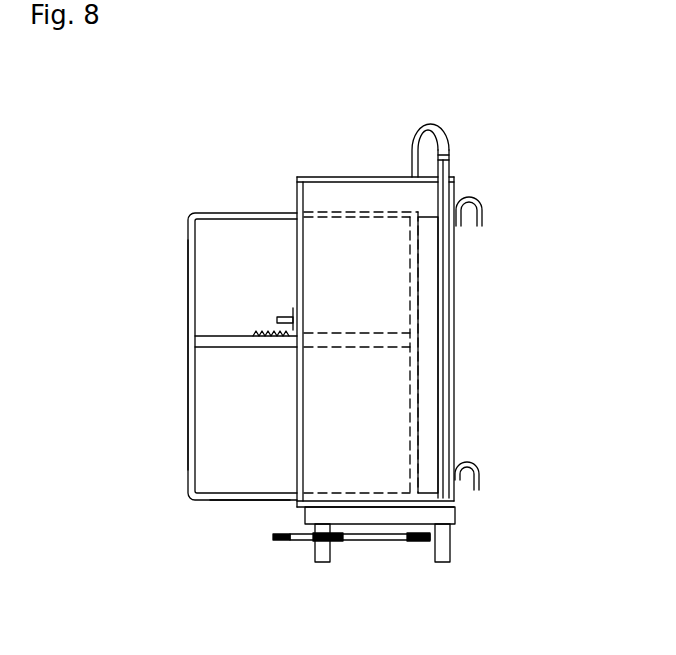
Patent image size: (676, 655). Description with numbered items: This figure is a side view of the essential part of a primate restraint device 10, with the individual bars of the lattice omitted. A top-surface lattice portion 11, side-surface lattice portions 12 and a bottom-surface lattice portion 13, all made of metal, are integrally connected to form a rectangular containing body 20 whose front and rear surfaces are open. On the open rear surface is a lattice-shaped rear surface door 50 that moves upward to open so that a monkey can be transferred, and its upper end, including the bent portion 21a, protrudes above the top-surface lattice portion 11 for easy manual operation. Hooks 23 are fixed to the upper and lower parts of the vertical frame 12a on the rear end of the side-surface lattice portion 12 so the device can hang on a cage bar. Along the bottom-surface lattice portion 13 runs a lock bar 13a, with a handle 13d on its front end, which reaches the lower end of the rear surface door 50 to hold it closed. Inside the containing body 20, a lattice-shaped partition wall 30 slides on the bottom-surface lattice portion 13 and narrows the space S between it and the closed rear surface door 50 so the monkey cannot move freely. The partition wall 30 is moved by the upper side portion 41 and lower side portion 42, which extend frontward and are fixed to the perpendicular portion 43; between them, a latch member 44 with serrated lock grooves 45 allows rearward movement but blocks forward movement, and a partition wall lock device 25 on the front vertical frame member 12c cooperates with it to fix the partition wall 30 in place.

The primate restraint device 10 is at (105, 212).
The containing body 20 is at (304, 153).
The top-surface lattice portion 11 is at (348, 177).
The side-surface lattice portion 12 is at (318, 204).
The vertical frame 12a is at (457, 181).
The vertical frame member 12c is at (305, 416).
The bottom-surface lattice portion 13 is at (364, 507).
The lock bar 13a is at (396, 540).
The handle 13d is at (285, 541).
The pipe bend 21a is at (430, 122).
The hook 23 is at (484, 216).
The partition wall lock device 25 is at (293, 314).
The partition wall 30 is at (410, 290).
The upper side portion 41 is at (215, 212).
The lower side portion 42 is at (213, 503).
The perpendicular portion 43 is at (190, 264).
The latch member 44 is at (215, 346).
The serrated lock groove 45 is at (265, 334).
The rear surface door 50 is at (446, 163).
The space S is at (420, 370).